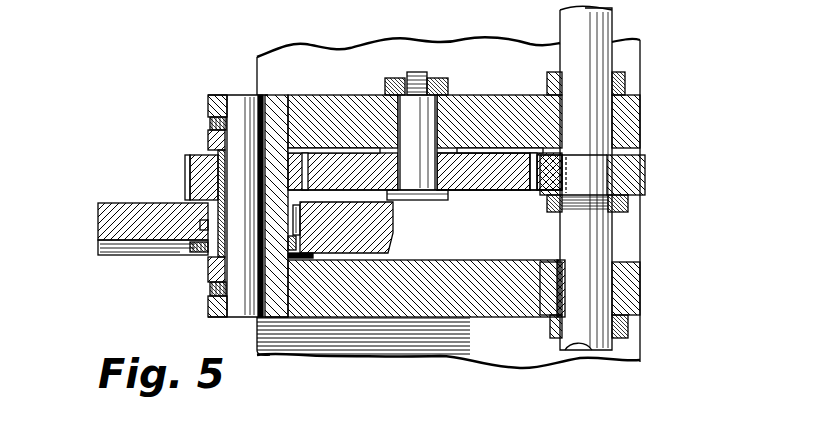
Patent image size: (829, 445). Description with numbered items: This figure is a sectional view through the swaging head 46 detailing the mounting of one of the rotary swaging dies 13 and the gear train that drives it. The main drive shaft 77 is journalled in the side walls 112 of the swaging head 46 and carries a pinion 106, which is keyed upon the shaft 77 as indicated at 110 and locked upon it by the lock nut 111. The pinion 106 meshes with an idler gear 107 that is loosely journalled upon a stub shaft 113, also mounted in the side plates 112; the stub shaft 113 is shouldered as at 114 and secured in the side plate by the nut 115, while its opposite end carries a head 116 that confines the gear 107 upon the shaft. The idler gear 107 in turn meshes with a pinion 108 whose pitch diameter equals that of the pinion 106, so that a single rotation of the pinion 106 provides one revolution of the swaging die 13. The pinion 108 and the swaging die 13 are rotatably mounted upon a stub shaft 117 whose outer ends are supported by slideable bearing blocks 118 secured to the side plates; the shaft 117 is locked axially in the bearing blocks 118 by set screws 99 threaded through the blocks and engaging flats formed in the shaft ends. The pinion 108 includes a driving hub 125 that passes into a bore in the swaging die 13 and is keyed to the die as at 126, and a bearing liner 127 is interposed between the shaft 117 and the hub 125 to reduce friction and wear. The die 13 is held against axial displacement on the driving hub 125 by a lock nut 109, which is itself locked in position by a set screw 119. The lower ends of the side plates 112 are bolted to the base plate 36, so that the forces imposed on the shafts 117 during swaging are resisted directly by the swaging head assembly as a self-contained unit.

The rotary swaging die 13 is at (98, 231).
The base plate 36 is at (300, 343).
The swaging head 46 is at (336, 96).
The main drive shaft 77 is at (600, 248).
The set screws 99 is at (210, 123).
The pinion 106 is at (627, 175).
The idler gear 107 is at (490, 182).
The pinion 108 is at (200, 167).
The lock nut 109 is at (292, 250).
The key 110 is at (560, 182).
The lock nut 111 is at (628, 205).
The side wall 112 is at (496, 98).
The stub shaft 113 is at (418, 72).
The shoulder 114 is at (440, 145).
The nut 115 is at (393, 78).
The head 116 is at (420, 197).
The stub shaft 117 is at (237, 140).
The slideable bearing block 118 is at (208, 100).
The set screw 119 is at (183, 246).
The driving hub 125 is at (210, 225).
The key 126 is at (295, 230).
The bearing liner 127 is at (228, 242).